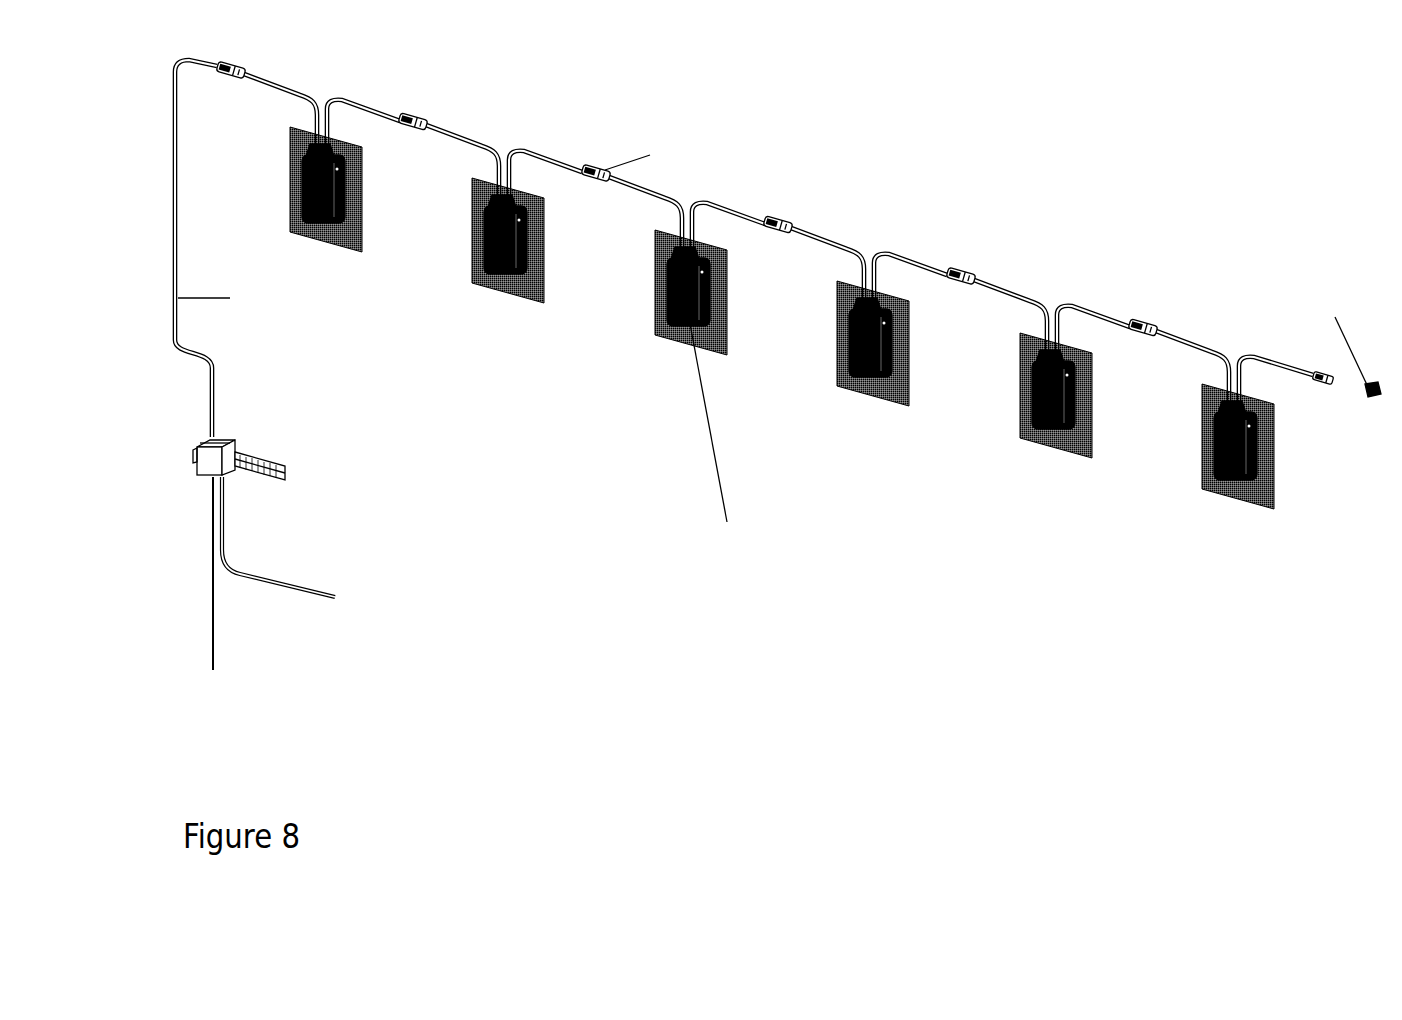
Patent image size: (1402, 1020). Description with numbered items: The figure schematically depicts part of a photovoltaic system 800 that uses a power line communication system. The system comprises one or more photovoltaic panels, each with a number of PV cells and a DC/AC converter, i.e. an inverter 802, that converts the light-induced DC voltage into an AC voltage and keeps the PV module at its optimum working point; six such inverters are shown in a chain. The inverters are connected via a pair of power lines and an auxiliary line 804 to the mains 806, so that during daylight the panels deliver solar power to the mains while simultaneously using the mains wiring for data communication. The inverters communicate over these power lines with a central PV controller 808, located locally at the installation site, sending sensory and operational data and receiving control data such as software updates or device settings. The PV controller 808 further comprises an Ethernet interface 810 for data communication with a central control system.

The photovoltaic system 800 is at (749, 426).
The DC/AC converter (inverter) 802 is at (809, 335).
The auxiliary line 804 is at (749, 248).
The mains 806 is at (213, 585).
The central PV controller 808 is at (227, 462).
The Ethernet interface 810 is at (320, 590).